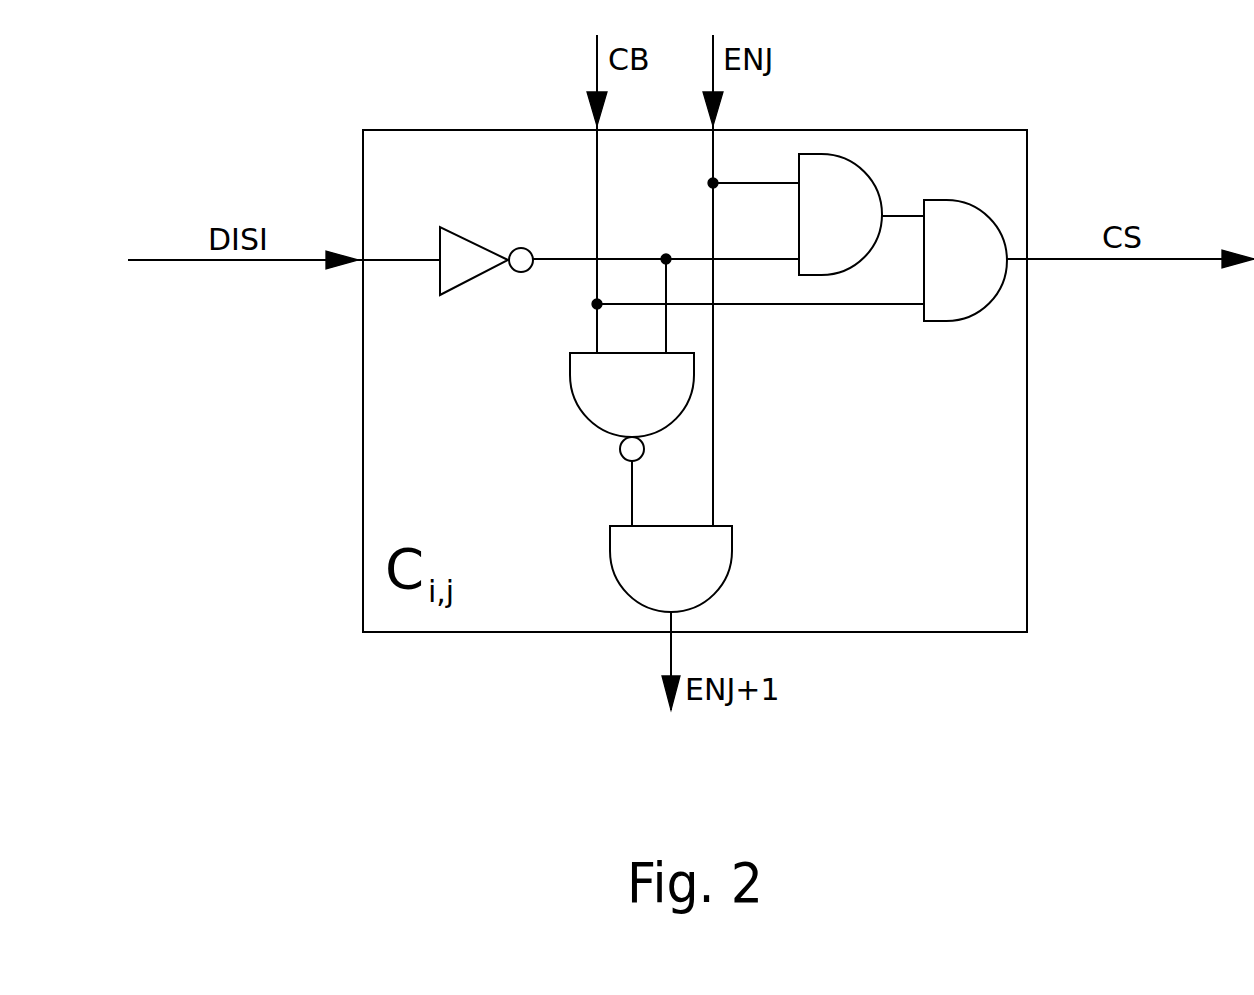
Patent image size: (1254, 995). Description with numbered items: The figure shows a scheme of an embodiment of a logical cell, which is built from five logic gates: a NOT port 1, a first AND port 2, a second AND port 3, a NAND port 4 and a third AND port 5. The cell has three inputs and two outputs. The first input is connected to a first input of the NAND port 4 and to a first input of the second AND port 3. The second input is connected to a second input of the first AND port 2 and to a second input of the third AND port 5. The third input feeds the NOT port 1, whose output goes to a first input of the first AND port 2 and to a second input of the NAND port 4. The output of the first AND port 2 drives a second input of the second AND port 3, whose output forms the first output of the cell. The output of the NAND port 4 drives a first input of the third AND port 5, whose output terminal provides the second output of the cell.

The NOT port 1 is at (486, 261).
The first AND port 2 is at (840, 214).
The second AND port 3 is at (965, 260).
The NAND port 4 is at (632, 407).
The third AND port 5 is at (671, 569).